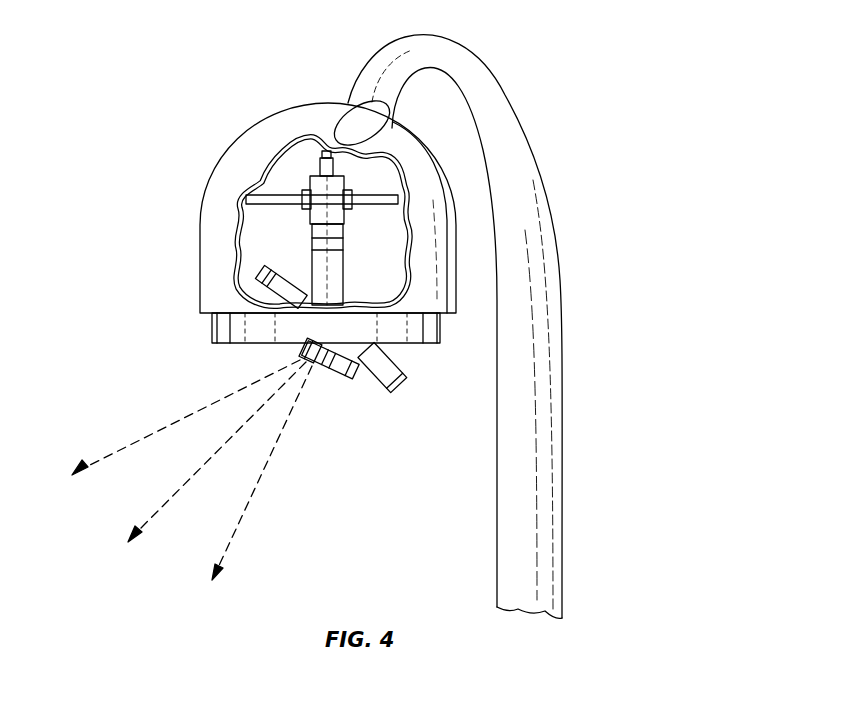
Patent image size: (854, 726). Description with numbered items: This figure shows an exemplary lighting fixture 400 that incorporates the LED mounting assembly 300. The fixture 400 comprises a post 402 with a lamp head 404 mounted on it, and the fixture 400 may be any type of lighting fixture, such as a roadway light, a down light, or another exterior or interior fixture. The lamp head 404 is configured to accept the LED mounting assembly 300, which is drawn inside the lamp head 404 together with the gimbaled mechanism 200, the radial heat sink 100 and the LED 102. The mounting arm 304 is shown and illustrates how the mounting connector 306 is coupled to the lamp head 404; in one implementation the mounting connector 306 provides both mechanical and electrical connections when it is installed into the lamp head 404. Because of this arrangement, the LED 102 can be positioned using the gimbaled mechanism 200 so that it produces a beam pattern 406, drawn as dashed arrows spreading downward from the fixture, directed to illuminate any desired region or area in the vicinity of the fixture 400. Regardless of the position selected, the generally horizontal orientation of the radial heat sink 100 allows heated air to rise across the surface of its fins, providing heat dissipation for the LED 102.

The radial heat sink 100 is at (344, 366).
The LED 102 is at (332, 362).
The gimbaled mechanism 200 is at (382, 386).
The LED mounting assembly 300 is at (226, 346).
The mounting arm 304 is at (306, 253).
The mounting connector 306 is at (305, 185).
The lighting fixture 400 is at (618, 62).
The post 402 is at (545, 190).
The lamp head 404 is at (203, 207).
The beam pattern 406 is at (234, 580).